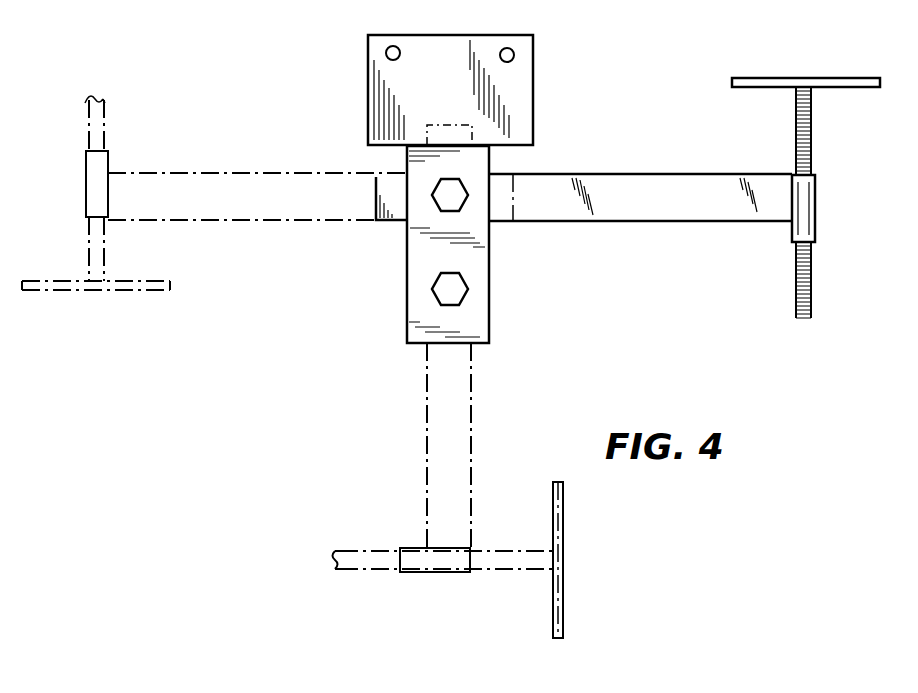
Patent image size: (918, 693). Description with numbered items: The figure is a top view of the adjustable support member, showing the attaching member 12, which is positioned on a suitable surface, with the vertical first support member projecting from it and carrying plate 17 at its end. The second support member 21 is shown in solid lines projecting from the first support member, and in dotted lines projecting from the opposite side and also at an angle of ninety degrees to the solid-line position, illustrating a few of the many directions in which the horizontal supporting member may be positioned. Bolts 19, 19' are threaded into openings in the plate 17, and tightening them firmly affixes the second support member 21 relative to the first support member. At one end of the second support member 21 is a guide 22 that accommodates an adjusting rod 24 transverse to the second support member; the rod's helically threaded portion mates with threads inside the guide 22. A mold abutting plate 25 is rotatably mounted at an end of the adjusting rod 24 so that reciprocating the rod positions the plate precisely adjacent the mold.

The attaching member 12 is at (536, 91).
The plate 17 is at (481, 236).
The bolt 19 is at (438, 201).
The bolt 19' is at (420, 289).
The second support member 21 is at (281, 212).
The guide 22 is at (812, 202).
The adjusting rod 24 is at (813, 264).
The mold abutting plate 25 is at (775, 77).